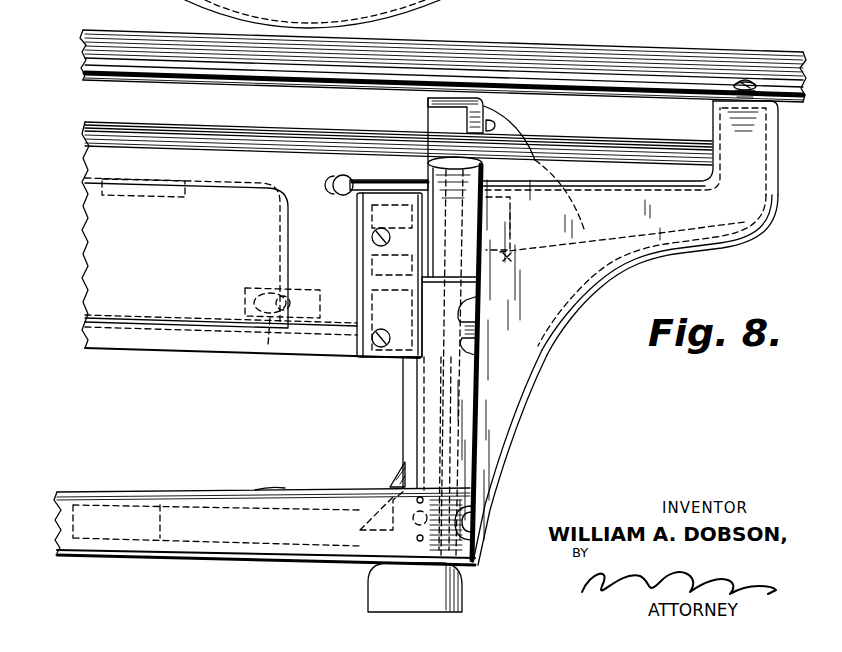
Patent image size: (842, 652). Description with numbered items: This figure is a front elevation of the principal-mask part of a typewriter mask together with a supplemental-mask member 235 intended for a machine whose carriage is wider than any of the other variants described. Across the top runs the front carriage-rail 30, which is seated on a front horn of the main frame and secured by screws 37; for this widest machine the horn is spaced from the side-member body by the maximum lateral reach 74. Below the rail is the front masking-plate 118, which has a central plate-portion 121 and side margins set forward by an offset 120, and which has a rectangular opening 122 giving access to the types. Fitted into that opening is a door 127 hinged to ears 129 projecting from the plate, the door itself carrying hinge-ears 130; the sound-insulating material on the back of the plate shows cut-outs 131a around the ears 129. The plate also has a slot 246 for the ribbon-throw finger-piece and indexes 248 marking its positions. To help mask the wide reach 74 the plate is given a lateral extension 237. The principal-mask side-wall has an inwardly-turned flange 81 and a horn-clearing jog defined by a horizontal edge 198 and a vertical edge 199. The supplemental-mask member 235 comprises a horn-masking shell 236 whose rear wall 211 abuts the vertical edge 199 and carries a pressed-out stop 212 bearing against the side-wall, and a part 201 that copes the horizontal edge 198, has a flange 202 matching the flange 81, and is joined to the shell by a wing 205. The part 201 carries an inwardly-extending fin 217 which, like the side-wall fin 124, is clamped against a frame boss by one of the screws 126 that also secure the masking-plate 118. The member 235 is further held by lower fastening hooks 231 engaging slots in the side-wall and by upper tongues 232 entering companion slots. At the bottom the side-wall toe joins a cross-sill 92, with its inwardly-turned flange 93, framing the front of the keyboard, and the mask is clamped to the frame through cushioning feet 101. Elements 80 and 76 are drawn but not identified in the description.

The front carriage-rail 30 is at (592, 55).
The screws 37 is at (748, 80).
The door 127 is at (93, 252).
The lateral extension 237 is at (607, 157).
The plate-portion 121 is at (292, 233).
The cut-outs 131a is at (290, 282).
The hinge-ears 130 is at (268, 330).
The ears 129 is at (290, 328).
The rectangular opening 122 is at (186, 328).
The masking-plate 118 is at (140, 335).
The slot 246 is at (355, 176).
The indexes 248 is at (343, 192).
The offset 120 is at (357, 345).
The fin 217 is at (368, 262).
The fin 124 is at (363, 300).
The screws 126 is at (372, 238).
The horizontal edge 198 is at (450, 283).
The vertical edge 199 is at (428, 108).
The rear wall 211 is at (478, 118).
The stop 212 is at (496, 127).
The part 201 is at (440, 170).
The flange 202 is at (455, 215).
The inwardly-turned flange 81 is at (457, 392).
The tongues 232 is at (478, 326).
The lateral reach 74 is at (587, 227).
The wing 205 is at (507, 258).
The horn-masking shell 236 is at (681, 245).
The supplemental-mask member 235 is at (546, 373).
The bracket 80 is at (393, 490).
The cross-sill 92 is at (223, 523).
The inwardly-turned flange 93 is at (95, 490).
The hidden channel 76 is at (170, 500).
The fastening hooks 231 is at (472, 536).
The cushioning feet 101 is at (460, 592).